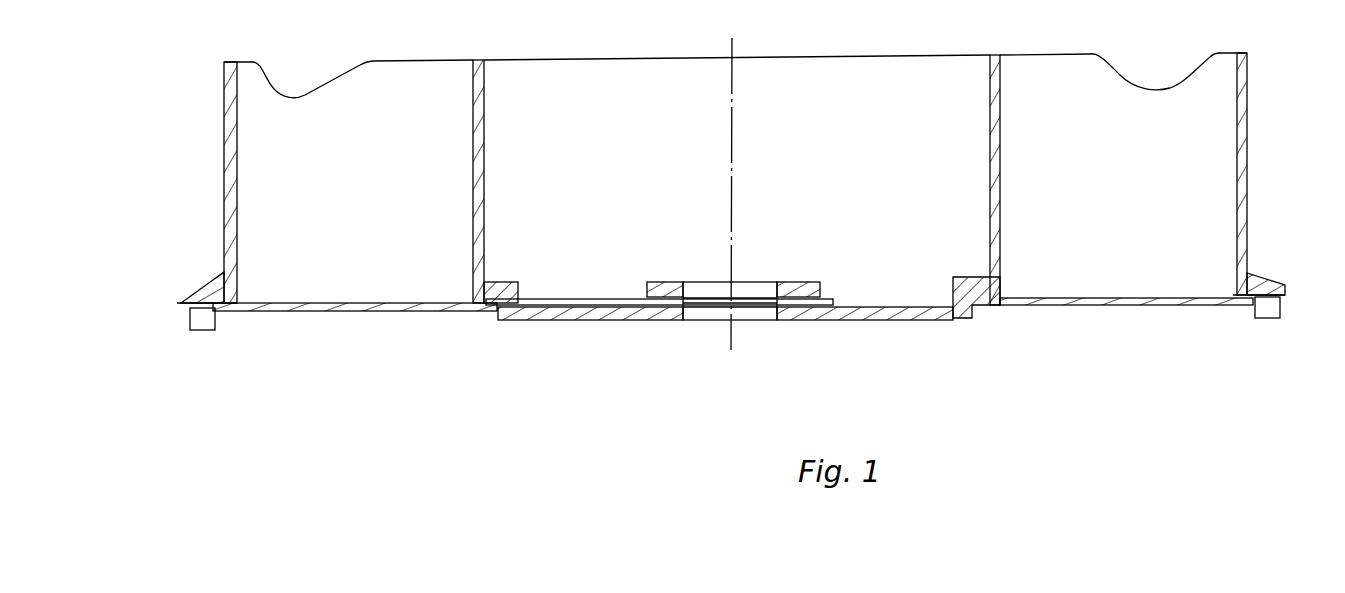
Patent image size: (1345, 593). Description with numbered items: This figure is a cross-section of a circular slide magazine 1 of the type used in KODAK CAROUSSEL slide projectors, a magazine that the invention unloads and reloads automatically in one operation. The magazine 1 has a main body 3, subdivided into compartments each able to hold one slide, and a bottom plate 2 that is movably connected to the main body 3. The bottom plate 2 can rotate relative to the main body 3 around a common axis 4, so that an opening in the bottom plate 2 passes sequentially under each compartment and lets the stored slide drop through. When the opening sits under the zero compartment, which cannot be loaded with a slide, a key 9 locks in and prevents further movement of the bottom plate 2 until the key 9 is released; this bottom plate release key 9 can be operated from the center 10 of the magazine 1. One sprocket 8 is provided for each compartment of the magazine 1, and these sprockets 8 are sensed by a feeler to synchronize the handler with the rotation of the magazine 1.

The circular slide magazine 1 is at (847, 156).
The bottom plate 2 is at (1162, 305).
The magazine main body 3 is at (945, 314).
The common axis 4 is at (733, 43).
The sprocket 8 is at (1276, 312).
The bottom plate release key 9 is at (575, 302).
The center 10 is at (752, 290).